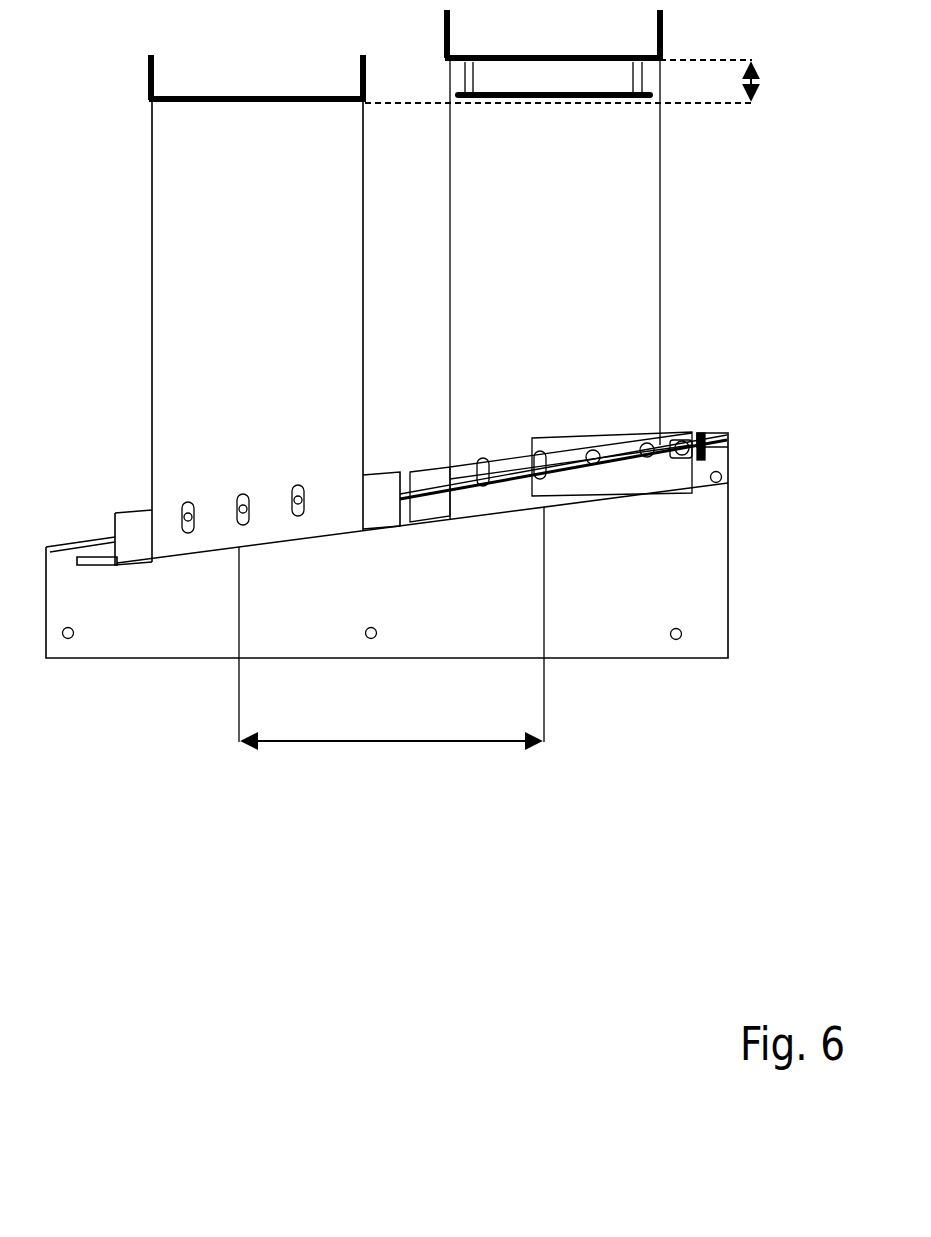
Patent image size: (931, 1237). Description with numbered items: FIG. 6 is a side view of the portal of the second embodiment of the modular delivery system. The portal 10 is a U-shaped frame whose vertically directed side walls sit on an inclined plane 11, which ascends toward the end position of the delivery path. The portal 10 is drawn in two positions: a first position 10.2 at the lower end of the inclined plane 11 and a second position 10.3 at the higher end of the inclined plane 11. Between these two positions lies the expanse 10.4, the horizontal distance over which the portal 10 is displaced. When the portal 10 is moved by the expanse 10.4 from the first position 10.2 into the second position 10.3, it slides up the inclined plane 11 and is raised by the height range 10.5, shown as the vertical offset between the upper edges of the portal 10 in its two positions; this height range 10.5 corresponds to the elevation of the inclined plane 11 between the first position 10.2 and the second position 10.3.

The portal 10 is at (177, 176).
The inclined plane 11 is at (707, 570).
The first position 10.2 is at (239, 688).
The second position 10.3 is at (544, 700).
The expanse 10.4 is at (337, 742).
The height range 10.5 is at (752, 78).